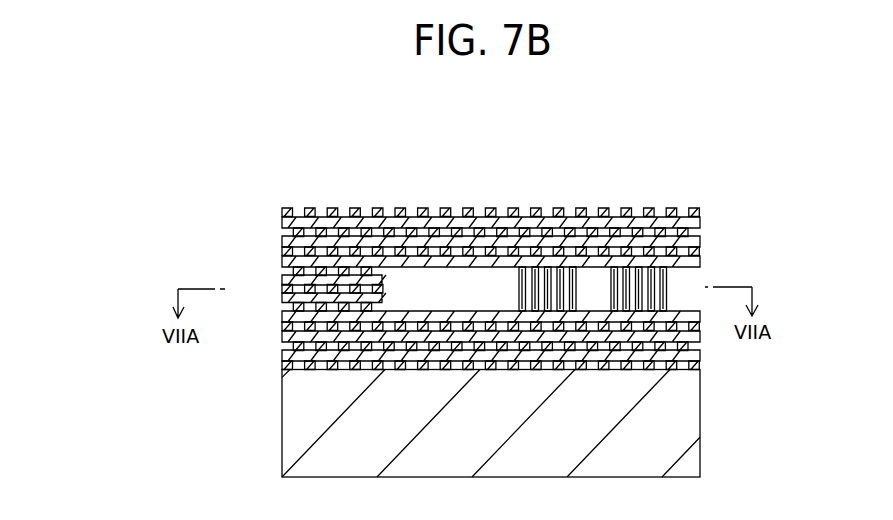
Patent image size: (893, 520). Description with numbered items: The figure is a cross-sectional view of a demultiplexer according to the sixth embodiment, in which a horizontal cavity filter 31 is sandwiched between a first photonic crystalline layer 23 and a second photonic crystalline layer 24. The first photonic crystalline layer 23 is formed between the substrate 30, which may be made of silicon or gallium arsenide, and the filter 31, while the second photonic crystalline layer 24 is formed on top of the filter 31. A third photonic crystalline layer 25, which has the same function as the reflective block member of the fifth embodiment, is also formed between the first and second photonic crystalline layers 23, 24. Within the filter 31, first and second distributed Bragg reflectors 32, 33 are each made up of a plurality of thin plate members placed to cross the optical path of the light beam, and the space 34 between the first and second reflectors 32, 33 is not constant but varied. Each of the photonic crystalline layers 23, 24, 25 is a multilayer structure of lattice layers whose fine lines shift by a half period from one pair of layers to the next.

The first photonic crystalline layer 23 is at (280, 312).
The second photonic crystalline layer 24 is at (280, 208).
The third photonic crystalline layer 25 is at (258, 290).
The substrate 30 is at (700, 417).
The horizontal cavity filter 31 is at (592, 209).
The first distributed Bragg reflector 32 is at (573, 200).
The second distributed Bragg reflector 33 is at (637, 233).
The space between the first and second reflectors 34 is at (604, 200).